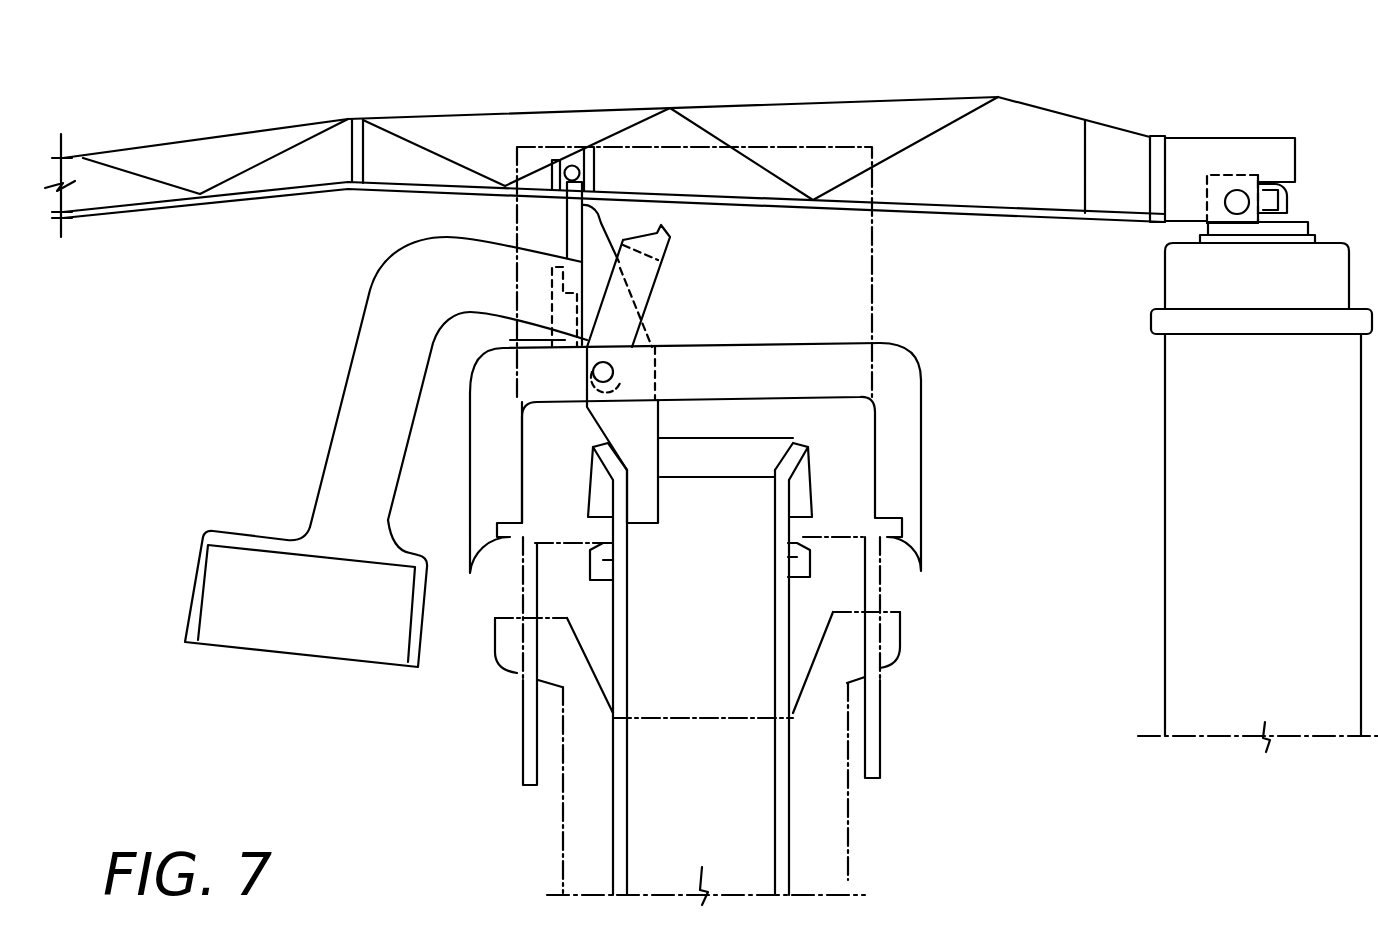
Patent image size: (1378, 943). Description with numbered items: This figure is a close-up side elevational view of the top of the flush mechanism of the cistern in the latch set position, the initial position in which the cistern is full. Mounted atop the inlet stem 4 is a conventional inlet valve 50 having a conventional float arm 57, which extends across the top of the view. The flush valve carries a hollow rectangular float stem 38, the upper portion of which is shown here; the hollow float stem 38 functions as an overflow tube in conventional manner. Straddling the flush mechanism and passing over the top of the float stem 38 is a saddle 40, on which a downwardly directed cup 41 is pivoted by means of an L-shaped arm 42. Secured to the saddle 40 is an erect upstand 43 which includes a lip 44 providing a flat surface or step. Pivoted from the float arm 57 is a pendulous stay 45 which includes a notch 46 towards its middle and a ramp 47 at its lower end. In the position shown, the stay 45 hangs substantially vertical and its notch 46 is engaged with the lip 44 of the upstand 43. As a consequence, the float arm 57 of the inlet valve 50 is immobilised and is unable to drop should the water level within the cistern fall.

The inlet stem 4 is at (1199, 470).
The float stem 38 is at (787, 825).
The saddle 40 is at (907, 410).
The cup 41 is at (307, 635).
The L-shaped arm 42 is at (350, 430).
The upstand 43 is at (510, 337).
The lip 44 is at (573, 306).
The stay 45 is at (640, 427).
The notch 46 is at (583, 263).
The ramp 47 is at (623, 467).
The inlet valve 50 is at (1308, 185).
The float arm 57 is at (900, 102).